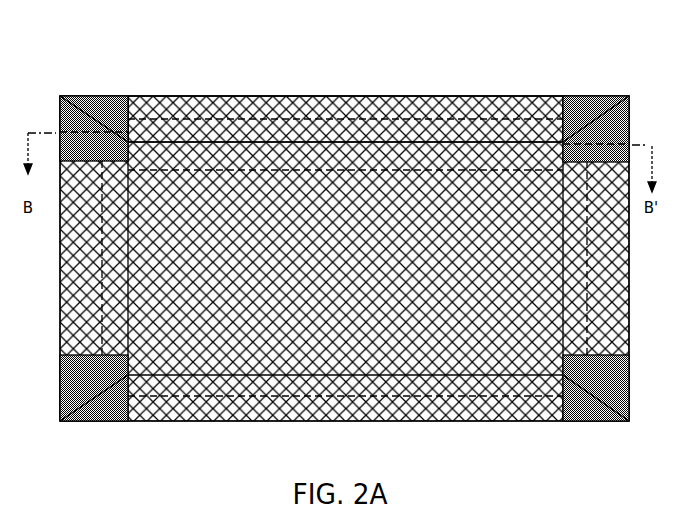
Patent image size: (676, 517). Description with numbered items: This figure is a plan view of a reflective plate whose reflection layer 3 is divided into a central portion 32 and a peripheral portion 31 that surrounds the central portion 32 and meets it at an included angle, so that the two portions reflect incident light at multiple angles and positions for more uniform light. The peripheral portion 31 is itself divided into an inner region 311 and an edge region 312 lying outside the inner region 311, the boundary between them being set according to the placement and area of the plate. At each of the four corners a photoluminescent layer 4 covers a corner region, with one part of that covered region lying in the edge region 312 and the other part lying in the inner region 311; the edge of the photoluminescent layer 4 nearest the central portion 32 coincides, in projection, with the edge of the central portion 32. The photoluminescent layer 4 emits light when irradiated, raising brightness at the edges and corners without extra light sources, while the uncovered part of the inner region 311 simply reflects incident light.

The reflection layer 3 is at (418, 39).
The peripheral portion 31 is at (455, 64).
The inner region 311 is at (463, 132).
The edge region 312 is at (496, 107).
The central portion 32 is at (424, 187).
The photoluminescent layer 4 is at (60, 96).